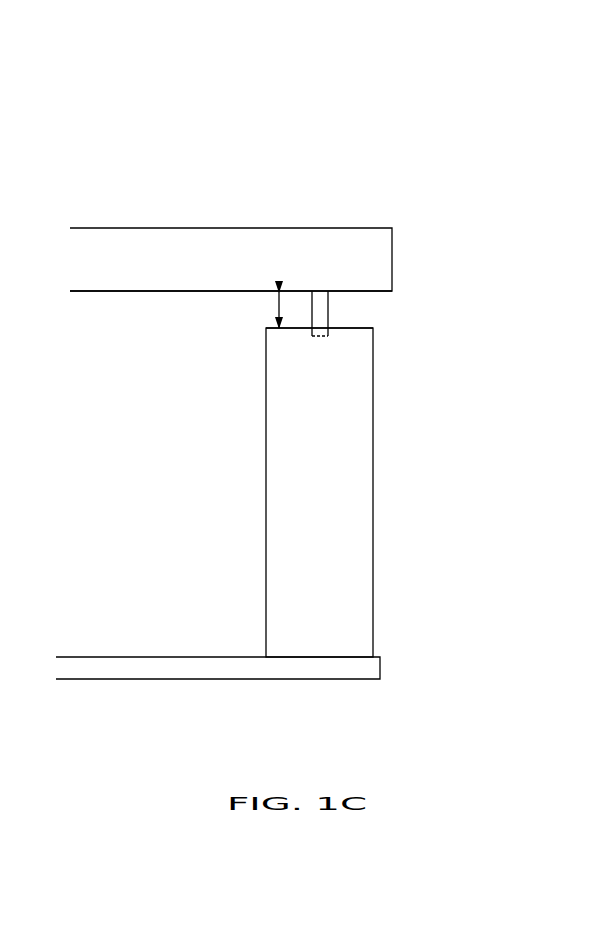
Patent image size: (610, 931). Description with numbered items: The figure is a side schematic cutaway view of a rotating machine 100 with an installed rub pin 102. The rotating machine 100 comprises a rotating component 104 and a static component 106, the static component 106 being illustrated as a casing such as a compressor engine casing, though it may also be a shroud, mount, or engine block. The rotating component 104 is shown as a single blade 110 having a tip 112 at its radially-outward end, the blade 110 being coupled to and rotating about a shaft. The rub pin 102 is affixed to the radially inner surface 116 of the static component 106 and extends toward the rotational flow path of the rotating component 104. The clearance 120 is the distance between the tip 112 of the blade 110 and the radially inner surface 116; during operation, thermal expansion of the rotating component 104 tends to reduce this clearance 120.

The rotating machine 100 is at (140, 134).
The rub pin 102 is at (321, 307).
The rotating component 104 is at (432, 562).
The static component 106 is at (292, 238).
The blade 110 is at (359, 612).
The tip 112 is at (347, 328).
The radially inner surface 116 is at (140, 291).
The clearance 120 is at (277, 310).